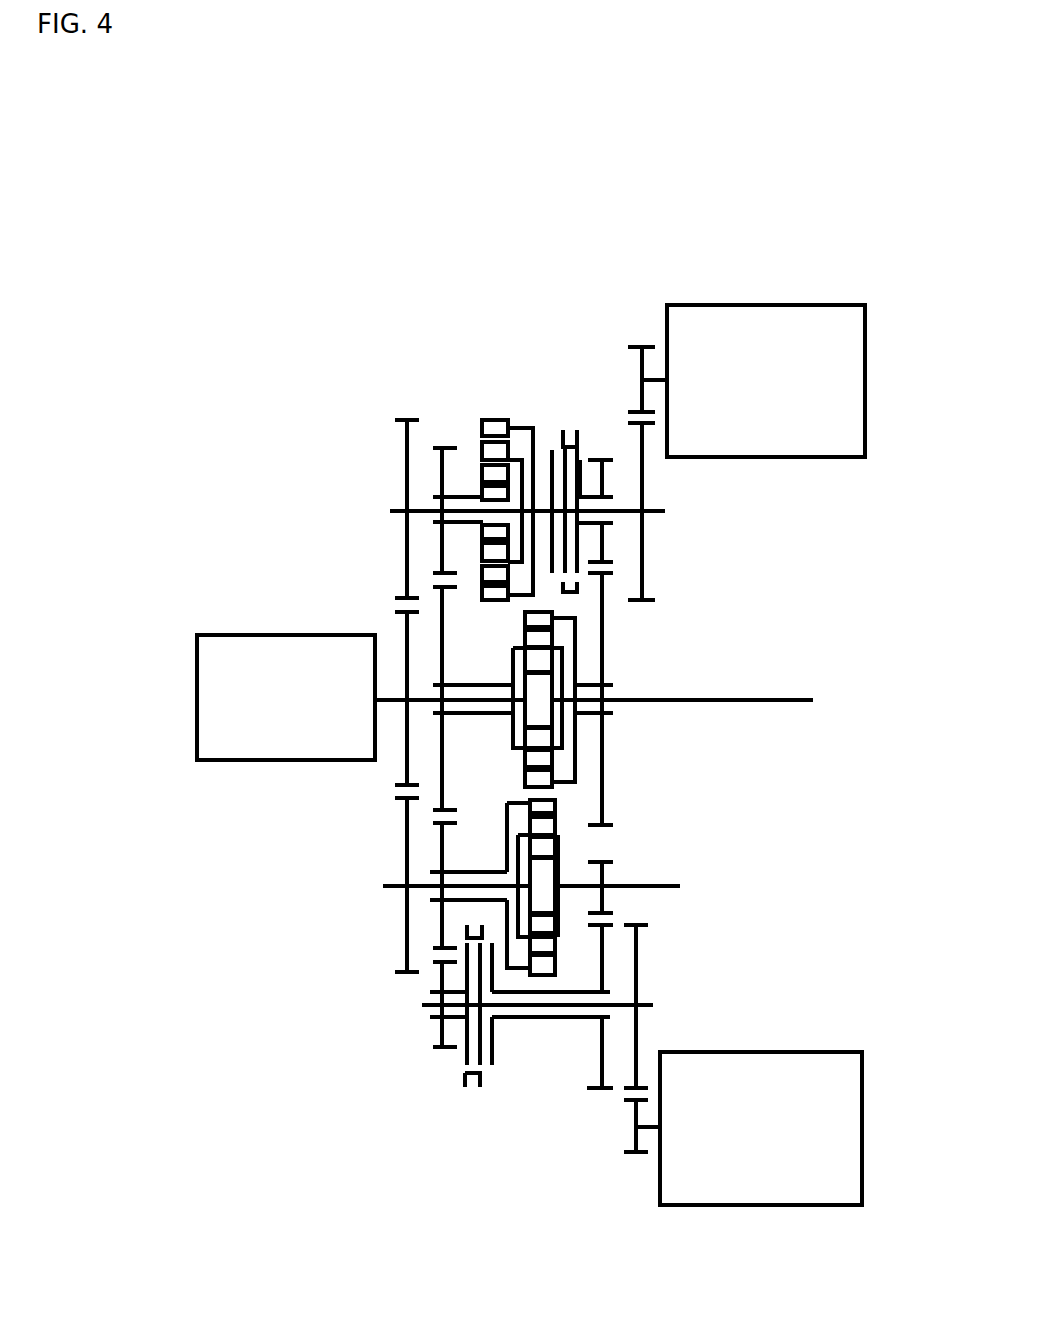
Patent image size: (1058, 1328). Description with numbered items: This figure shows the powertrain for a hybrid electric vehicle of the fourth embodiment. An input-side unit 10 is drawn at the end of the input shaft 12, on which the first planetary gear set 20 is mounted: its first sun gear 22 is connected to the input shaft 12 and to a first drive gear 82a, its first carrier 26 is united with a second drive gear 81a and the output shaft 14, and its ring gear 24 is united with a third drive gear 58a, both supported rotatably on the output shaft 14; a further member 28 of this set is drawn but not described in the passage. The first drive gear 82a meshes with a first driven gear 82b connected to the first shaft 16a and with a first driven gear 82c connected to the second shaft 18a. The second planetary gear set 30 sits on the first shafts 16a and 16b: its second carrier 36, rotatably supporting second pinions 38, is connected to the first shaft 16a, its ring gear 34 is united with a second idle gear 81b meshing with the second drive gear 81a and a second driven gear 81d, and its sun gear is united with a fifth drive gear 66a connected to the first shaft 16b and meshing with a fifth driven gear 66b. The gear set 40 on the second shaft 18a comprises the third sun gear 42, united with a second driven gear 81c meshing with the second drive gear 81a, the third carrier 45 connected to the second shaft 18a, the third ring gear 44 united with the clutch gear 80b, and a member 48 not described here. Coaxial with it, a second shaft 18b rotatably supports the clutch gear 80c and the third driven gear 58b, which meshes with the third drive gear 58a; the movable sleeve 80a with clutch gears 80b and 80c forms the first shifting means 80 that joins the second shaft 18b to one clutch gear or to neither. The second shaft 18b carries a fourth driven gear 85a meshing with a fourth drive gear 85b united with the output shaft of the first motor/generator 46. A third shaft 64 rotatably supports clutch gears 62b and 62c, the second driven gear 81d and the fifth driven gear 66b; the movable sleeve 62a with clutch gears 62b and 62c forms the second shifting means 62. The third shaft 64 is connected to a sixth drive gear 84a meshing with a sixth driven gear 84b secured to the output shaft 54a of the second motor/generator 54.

The engine 10 is at (262, 633).
The input shaft 12 is at (390, 697).
The output shaft 14 is at (792, 700).
The first shaft 16a is at (383, 886).
The first shaft 16b is at (680, 887).
The second shaft 18a is at (392, 509).
The second shaft 18b is at (665, 511).
The first planetary gear set 20 is at (602, 770).
The first sun gear 22 is at (565, 687).
The first ring gear 24 is at (560, 612).
The first carrier 26 is at (560, 648).
The carrier 28 is at (557, 762).
The second planetary gear set 30 is at (615, 832).
The second ring gear 34 is at (567, 807).
The second carrier 36 is at (560, 832).
The second pinions 38 is at (633, 843).
The gear train 40 is at (495, 409).
The third sun gear 42 is at (483, 530).
The third ring gear 44 is at (482, 423).
The third carrier 45 is at (483, 560).
The first motor/generator 46 is at (760, 303).
The gear 48 is at (483, 448).
The second motor/generator 54 is at (835, 1050).
The output shaft of the second motor/generator 54a is at (653, 1130).
The third drive gear 58a is at (642, 543).
The third driven gear 58b is at (622, 470).
The second shifting means 62 is at (470, 1093).
The movable sleeve 62a is at (477, 1090).
The clutch gear 62b is at (465, 1060).
The clutch gear 62c is at (495, 1060).
The third shaft 64 is at (422, 1005).
The fifth drive gear 66a is at (610, 903).
The fifth driven gear 66b is at (600, 963).
The first shifting means 80 is at (558, 413).
The movable sleeve 80a is at (578, 450).
The clutch gear 80b is at (553, 455).
The clutch gear 80c is at (587, 457).
The second drive gear 81a is at (440, 745).
The second idle gear 81b is at (440, 842).
The second driven gear 81c is at (349, 414).
The second driven gear 81d is at (433, 1030).
The first drive gear 82a is at (405, 628).
The first driven gear 82b is at (405, 935).
The first driven gear 82c is at (403, 452).
The sixth drive gear 84a is at (638, 1033).
The sixth driven gear 84b is at (627, 1140).
The fourth driven gear 85a is at (642, 513).
The fourth drive gear 85b is at (642, 366).